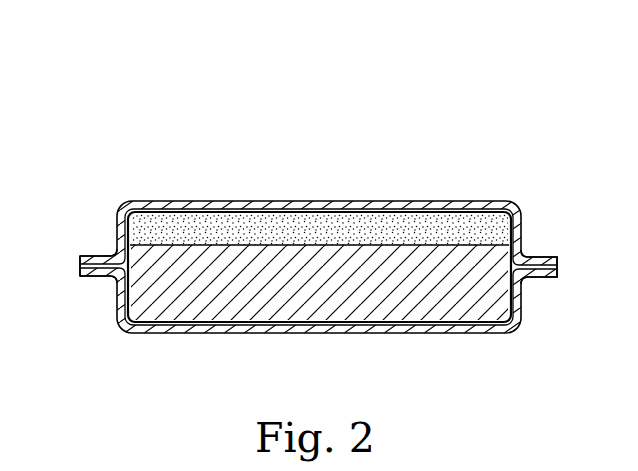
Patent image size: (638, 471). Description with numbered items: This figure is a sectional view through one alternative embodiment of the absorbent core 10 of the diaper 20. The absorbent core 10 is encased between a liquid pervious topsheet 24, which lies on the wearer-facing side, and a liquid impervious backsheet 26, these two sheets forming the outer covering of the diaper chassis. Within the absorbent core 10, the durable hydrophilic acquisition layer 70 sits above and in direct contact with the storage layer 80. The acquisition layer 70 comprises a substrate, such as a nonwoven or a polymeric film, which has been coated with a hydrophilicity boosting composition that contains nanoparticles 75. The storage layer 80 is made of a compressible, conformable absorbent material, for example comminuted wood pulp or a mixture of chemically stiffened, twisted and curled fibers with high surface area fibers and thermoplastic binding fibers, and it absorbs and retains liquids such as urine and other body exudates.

The absorbent core 10 is at (256, 101).
The diaper 20 is at (314, 113).
The topsheet 24 is at (223, 205).
The backsheet 26 is at (110, 277).
The durable hydrophilic acquisition layer 70 is at (425, 222).
The nanoparticles 75 is at (503, 230).
The storage layer 80 is at (502, 295).